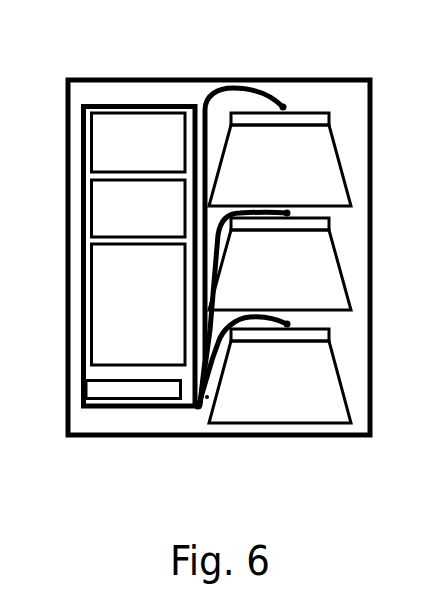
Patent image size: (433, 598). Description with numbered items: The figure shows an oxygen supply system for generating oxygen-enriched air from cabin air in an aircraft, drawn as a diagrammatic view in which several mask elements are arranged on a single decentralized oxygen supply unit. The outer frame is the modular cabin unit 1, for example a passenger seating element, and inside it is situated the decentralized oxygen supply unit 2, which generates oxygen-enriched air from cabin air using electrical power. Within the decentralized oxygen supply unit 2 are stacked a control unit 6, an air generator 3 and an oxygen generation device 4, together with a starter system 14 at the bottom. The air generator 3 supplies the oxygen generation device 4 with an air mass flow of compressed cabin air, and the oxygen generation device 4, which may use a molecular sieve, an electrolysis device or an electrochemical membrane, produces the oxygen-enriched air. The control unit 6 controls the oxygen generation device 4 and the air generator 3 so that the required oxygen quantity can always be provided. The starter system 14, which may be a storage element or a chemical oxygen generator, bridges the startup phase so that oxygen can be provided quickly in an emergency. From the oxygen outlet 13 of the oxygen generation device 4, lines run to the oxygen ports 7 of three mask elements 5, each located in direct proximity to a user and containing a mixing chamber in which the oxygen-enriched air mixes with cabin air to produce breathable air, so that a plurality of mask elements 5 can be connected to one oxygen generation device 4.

The modular cabin unit 1 is at (348, 91).
The decentralized oxygen supply unit 2 is at (129, 106).
The air generator 3 is at (107, 205).
The oxygen generation device 4 is at (107, 294).
The mask element 5 is at (297, 167).
The control unit 6 is at (107, 147).
The oxygen port 7 is at (283, 107).
The oxygen outlet 13 is at (198, 407).
The starter system 14 is at (107, 391).